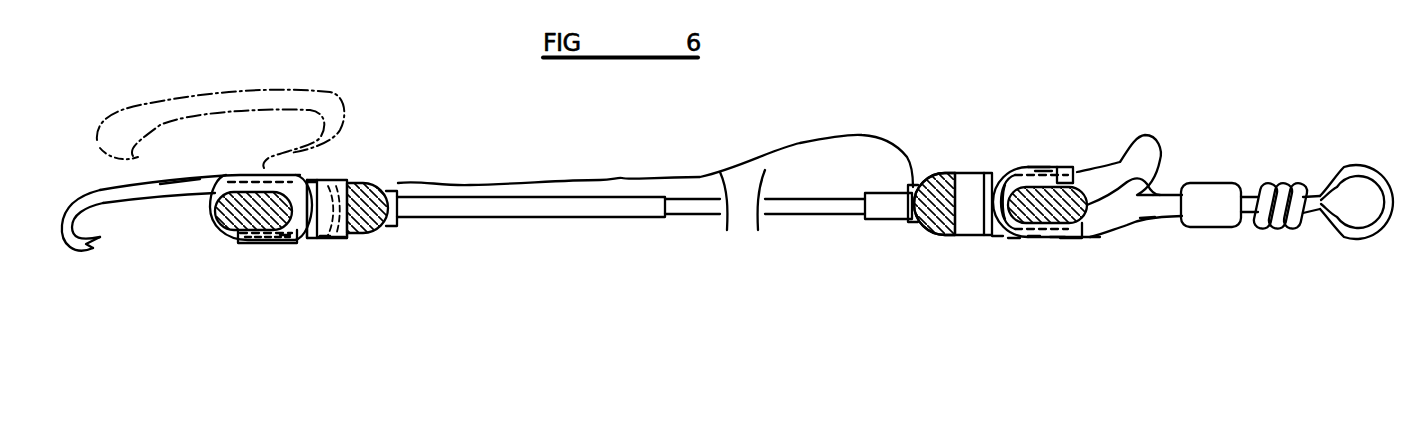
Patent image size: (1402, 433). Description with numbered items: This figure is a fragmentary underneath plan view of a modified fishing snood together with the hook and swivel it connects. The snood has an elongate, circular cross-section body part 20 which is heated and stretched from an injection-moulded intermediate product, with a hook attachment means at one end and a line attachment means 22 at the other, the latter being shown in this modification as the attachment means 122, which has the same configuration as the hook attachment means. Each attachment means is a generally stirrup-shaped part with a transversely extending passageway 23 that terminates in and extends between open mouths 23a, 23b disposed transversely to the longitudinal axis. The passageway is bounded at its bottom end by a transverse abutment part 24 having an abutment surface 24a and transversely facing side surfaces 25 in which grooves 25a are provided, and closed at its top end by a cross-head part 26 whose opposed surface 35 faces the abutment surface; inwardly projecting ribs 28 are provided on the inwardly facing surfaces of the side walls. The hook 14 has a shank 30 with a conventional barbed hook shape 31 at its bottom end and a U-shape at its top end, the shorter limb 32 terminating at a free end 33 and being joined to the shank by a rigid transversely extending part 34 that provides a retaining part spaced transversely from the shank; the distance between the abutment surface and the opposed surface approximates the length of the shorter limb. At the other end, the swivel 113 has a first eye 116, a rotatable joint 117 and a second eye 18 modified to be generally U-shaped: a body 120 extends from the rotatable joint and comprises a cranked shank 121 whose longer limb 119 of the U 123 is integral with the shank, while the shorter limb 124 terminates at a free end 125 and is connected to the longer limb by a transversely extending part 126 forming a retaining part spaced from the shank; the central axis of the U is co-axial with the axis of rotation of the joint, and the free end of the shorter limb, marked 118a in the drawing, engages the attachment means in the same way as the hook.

The hook 14 is at (100, 188).
The barbed hook shape 31 is at (92, 250).
The shank 30 is at (197, 193).
The side surfaces 25 is at (227, 190).
The grooves 25a is at (255, 188).
The transverse abutment part 24 is at (213, 232).
The abutment surface 24a is at (290, 232).
The line attachment means 22 is at (362, 181).
The open mouth 23a is at (352, 178).
The transversely extending part 34 is at (340, 180).
The open mouth 23b is at (340, 243).
The cross-head part 26 is at (303, 183).
The opposed surface 35 is at (330, 238).
The inwardly projecting ribs 28 is at (310, 237).
The free end 33 is at (272, 243).
The shorter limb 32 is at (278, 233).
The body part 20 is at (622, 178).
The second eye 18 is at (816, 219).
The line attachment means 122 is at (931, 168).
The passageway 23 is at (968, 190).
The free end 125 is at (1065, 170).
The shorter limb 124 is at (1045, 180).
The wire end 118a is at (1050, 178).
The transversely extending part 126 is at (1000, 238).
The U 123 is at (1013, 249).
The longer limb 119 is at (1060, 238).
The shank 121 is at (1120, 237).
The body 120 is at (1144, 232).
The rotatable joint 117 is at (1210, 183).
The swivel 113 is at (1230, 179).
The first eye 116 is at (1350, 235).